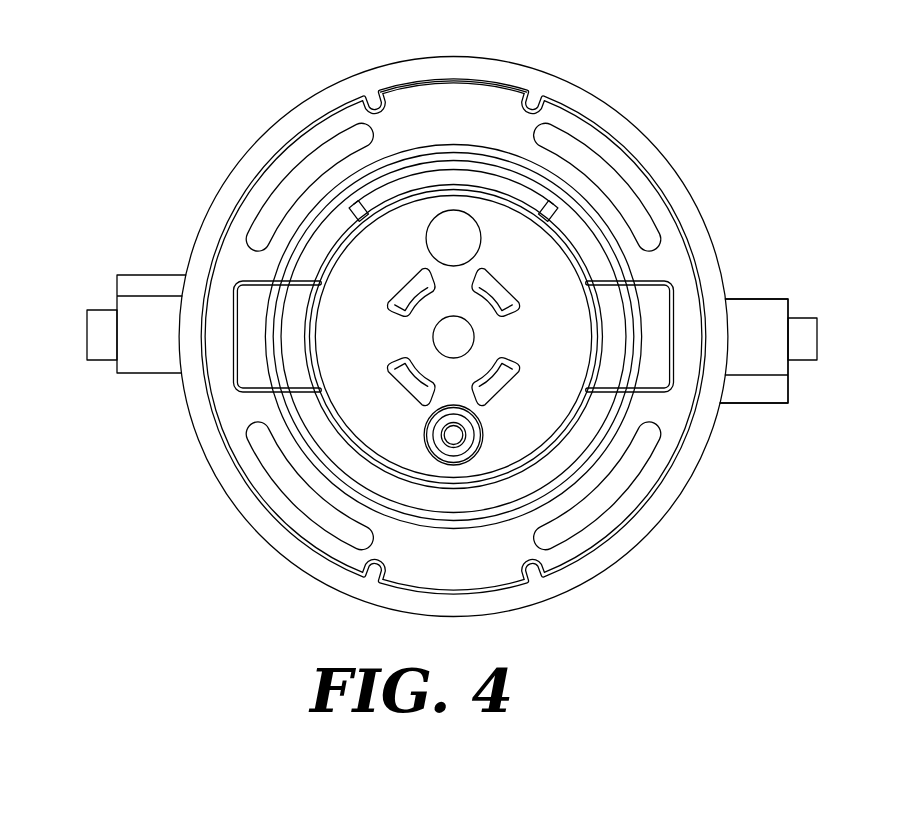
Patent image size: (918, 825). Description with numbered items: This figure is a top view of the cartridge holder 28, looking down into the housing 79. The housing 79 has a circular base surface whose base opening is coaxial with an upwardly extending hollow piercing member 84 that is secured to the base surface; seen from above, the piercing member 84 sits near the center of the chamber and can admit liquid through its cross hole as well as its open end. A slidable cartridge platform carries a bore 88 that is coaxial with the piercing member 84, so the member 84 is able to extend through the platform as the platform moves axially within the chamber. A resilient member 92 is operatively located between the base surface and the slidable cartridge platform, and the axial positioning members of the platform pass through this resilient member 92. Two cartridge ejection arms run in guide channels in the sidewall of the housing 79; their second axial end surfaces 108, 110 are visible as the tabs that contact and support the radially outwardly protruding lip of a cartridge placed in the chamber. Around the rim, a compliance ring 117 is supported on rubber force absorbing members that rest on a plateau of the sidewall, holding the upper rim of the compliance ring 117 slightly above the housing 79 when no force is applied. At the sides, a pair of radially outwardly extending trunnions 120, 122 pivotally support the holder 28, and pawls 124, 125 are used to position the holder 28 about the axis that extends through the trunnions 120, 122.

The cartridge holder 28 is at (772, 286).
The housing 79 is at (602, 113).
The hollow piercing member 84 is at (461, 440).
The bore 88 is at (424, 441).
The resilient member 92 is at (490, 303).
The second axial end surface 108 is at (252, 336).
The second axial end surface 110 is at (655, 322).
The compliance ring 117 is at (465, 107).
The trunnion 120 is at (98, 325).
The trunnion 122 is at (808, 342).
The pawl 124 is at (162, 362).
The pawl 125 is at (762, 391).